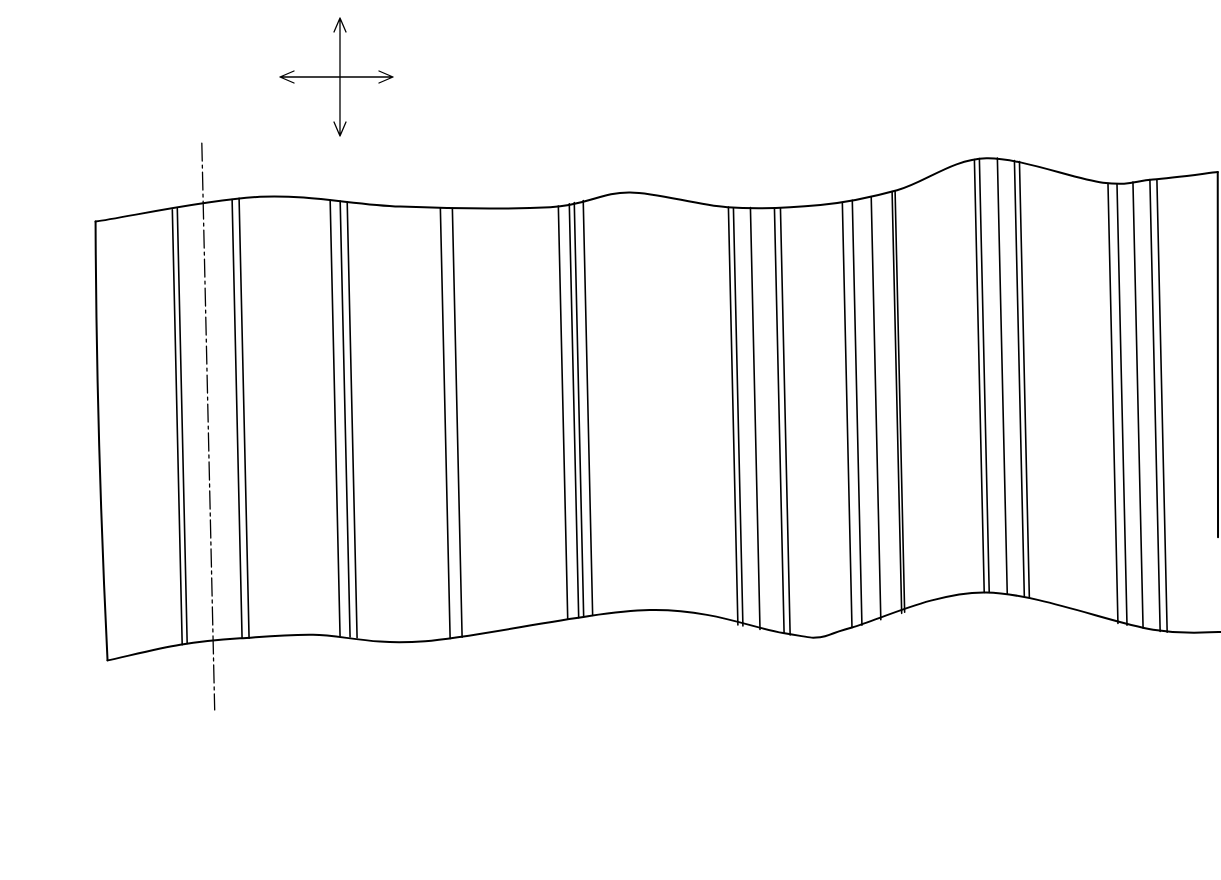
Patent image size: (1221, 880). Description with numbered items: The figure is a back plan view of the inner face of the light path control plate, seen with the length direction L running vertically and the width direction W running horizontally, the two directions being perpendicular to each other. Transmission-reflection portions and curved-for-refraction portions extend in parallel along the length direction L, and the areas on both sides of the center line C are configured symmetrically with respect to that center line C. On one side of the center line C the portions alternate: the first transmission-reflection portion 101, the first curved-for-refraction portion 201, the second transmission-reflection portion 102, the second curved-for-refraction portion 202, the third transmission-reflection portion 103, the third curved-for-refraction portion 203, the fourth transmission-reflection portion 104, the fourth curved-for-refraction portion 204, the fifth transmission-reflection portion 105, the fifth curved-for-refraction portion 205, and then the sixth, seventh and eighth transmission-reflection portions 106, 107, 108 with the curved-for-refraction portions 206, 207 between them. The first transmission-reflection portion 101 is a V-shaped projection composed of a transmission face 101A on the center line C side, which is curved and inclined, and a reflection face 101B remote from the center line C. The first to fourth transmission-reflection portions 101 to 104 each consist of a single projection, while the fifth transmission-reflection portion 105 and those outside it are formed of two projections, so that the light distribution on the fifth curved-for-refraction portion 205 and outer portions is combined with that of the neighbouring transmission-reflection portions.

The first transmission-reflection portion 101 is at (190, 668).
The transmission face 101A is at (226, 626).
The reflection face 101B is at (249, 628).
The second transmission-reflection portion 102 is at (352, 664).
The third transmission-reflection portion 103 is at (465, 669).
The fourth transmission-reflection portion 104 is at (585, 649).
The fifth transmission-reflection portion 105 is at (758, 659).
The sixth transmission-reflection portion 106 is at (884, 654).
The seventh transmission-reflection portion 107 is at (1007, 630).
The eighth bend line 108 is at (1130, 650).
The first curved-for-refraction portion 201 is at (122, 226).
The second curved-for-refraction portion 202 is at (392, 219).
The third curved-for-refraction portion 203 is at (500, 220).
The fourth curved-for-refraction portion 204 is at (643, 207).
The fifth curved-for-refraction portion 205 is at (812, 220).
The sixth flat region 206 is at (920, 190).
The seventh flat region 207 is at (662, 427).
The center line C is at (200, 158).
The length direction L is at (338, 52).
The width direction W is at (357, 72).